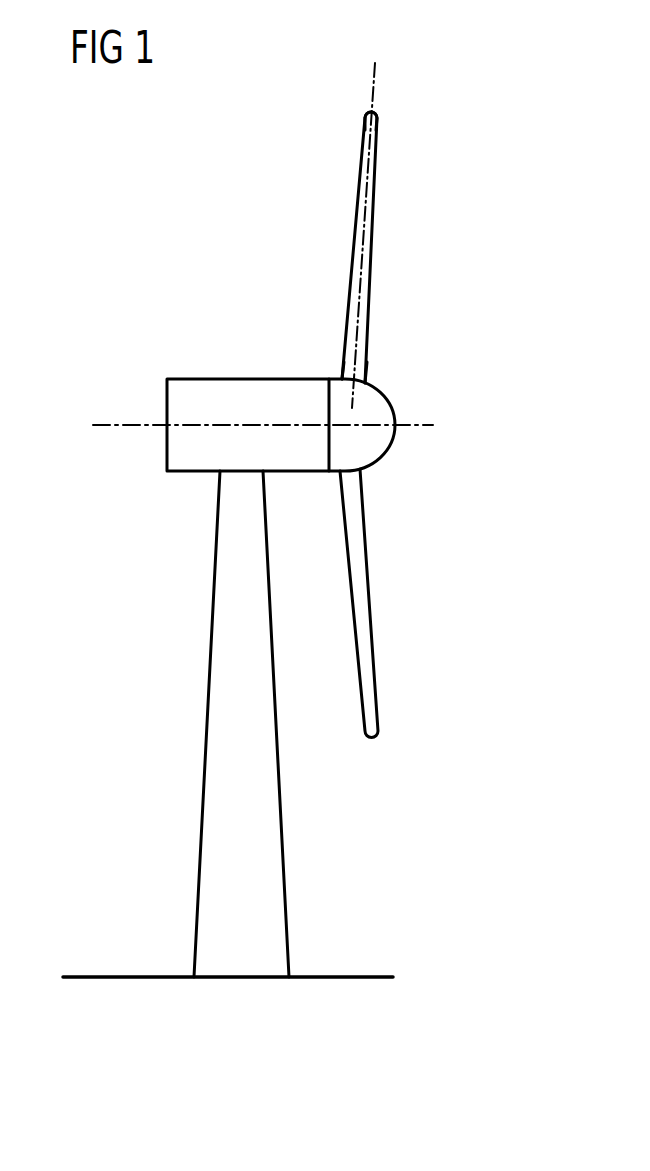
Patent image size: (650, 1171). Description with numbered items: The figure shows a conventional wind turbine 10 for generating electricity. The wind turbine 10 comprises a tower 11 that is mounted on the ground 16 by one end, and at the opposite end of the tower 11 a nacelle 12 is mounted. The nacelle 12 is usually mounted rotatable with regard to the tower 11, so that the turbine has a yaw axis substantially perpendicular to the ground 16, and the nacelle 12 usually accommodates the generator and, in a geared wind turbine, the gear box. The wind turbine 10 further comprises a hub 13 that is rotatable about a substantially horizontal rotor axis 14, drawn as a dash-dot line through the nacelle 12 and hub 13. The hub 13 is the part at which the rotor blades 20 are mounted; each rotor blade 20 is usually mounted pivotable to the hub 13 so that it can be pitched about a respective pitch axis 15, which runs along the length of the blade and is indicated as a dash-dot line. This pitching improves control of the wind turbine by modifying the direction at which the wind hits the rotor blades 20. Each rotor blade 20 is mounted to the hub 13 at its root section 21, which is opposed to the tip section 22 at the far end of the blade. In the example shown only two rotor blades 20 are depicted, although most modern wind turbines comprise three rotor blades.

The wind turbine 10 is at (144, 613).
The tower 11 is at (260, 808).
The nacelle 12 is at (217, 379).
The hub 13 is at (393, 398).
The rotor axis 14 is at (110, 425).
The pitch axis 15 is at (373, 79).
The ground 16 is at (118, 977).
The rotor blade 20 is at (405, 240).
The root section 21 is at (360, 372).
The tip section 22 is at (380, 128).